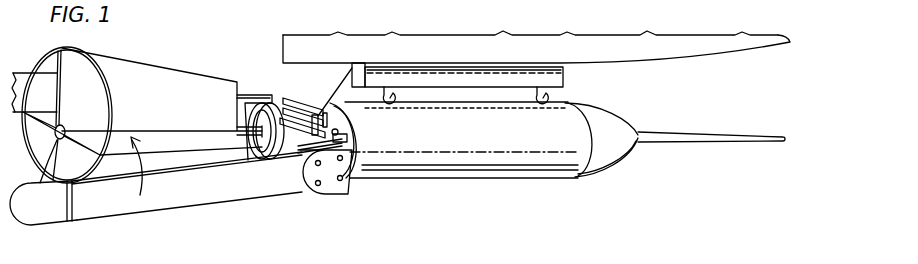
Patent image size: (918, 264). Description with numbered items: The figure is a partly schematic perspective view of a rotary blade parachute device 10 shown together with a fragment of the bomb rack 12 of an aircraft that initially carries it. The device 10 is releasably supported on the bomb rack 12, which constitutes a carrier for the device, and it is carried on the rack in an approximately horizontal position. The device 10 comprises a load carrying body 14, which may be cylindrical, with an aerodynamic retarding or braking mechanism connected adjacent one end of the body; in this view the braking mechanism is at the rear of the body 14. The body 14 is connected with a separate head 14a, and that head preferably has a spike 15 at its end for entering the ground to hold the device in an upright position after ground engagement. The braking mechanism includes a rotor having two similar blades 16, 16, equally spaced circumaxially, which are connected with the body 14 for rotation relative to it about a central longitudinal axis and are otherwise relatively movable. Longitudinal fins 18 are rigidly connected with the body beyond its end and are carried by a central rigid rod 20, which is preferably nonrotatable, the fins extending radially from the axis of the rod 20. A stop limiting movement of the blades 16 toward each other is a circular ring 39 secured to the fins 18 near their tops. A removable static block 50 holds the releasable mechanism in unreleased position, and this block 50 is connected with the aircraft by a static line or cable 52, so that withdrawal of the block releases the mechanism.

The rotary blade parachute device 10 is at (250, 90).
The bomb rack 12 is at (567, 80).
The load carrying body 14 is at (492, 168).
The head 14a is at (620, 115).
The spike 15 is at (678, 130).
The blades 16 is at (23, 73).
The longitudinal fins 18 is at (120, 67).
The central rigid rod 20 is at (43, 203).
The circular ring 39 is at (110, 93).
The static block 50 is at (315, 102).
The static line 52 is at (350, 70).